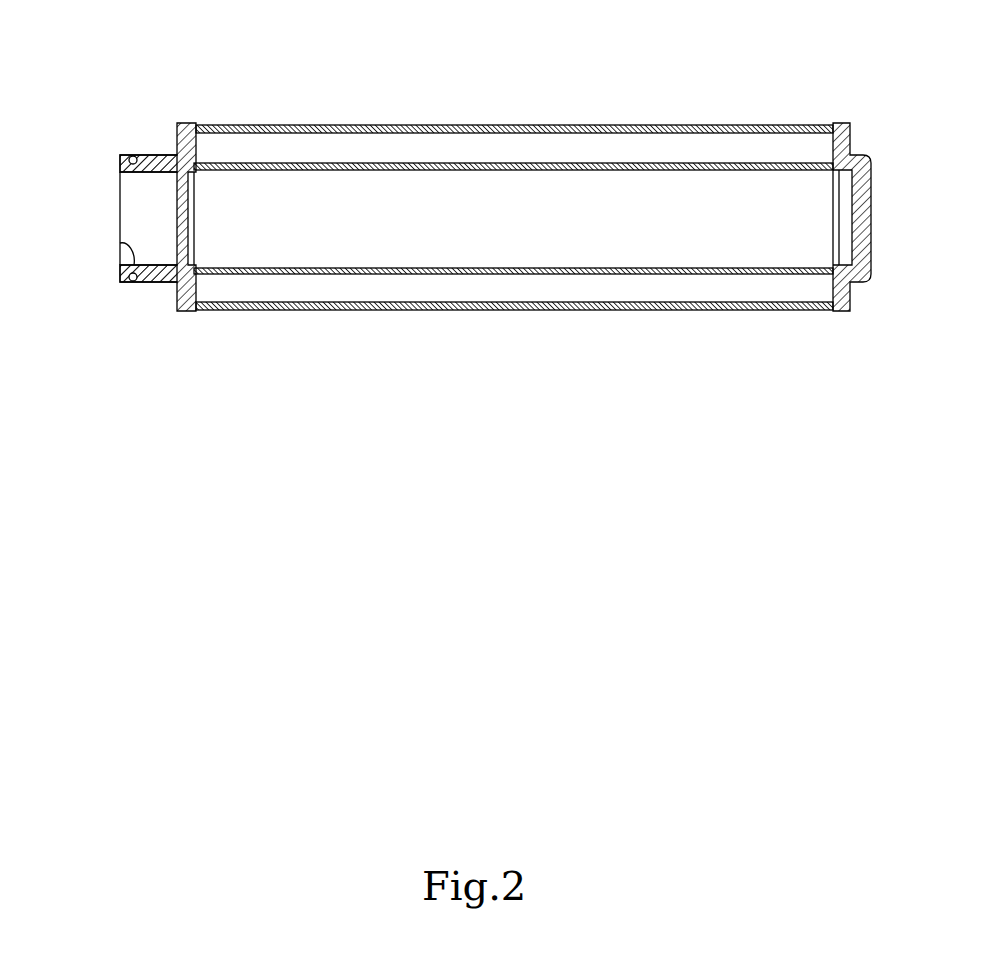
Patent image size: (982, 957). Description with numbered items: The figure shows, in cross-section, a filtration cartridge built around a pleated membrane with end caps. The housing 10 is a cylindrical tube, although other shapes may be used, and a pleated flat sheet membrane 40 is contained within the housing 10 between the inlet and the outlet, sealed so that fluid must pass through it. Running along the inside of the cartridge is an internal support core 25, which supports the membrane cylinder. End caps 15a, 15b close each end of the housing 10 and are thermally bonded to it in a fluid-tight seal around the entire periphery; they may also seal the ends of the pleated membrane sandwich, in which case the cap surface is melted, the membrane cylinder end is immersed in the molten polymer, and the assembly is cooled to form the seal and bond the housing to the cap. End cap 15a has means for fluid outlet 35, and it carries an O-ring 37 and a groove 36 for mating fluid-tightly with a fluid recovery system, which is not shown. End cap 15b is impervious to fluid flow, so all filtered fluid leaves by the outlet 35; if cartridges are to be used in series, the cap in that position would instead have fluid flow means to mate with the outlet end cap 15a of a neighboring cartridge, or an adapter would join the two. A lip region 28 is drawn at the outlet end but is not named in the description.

The housing 10 is at (447, 125).
The internal support core 25 is at (347, 162).
The membrane 40 is at (597, 150).
The end cap 15a is at (183, 122).
The end cap 15b is at (842, 122).
The fluid outlet 35 is at (103, 220).
The groove 36 is at (134, 172).
The lip of end fitting 28 is at (120, 243).
The O-ring 37 is at (130, 282).